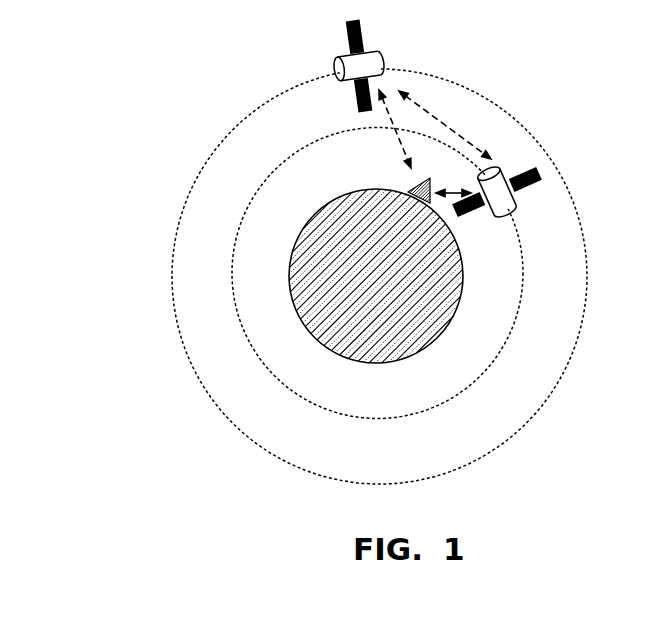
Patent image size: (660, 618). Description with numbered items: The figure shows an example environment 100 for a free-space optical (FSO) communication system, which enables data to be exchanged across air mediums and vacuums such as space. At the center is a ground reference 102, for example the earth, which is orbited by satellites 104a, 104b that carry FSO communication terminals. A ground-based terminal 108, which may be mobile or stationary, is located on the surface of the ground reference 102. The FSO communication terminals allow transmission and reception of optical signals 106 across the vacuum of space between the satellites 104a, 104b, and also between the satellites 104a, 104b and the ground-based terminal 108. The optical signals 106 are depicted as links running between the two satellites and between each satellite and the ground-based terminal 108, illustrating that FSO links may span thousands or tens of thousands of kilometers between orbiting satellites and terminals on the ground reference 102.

The environment 100 is at (190, 86).
The ground reference 102 is at (393, 288).
The satellite 104a is at (368, 56).
The satellite 104b is at (510, 210).
The optical signals 106 is at (396, 131).
The ground-based terminal 108 is at (409, 189).